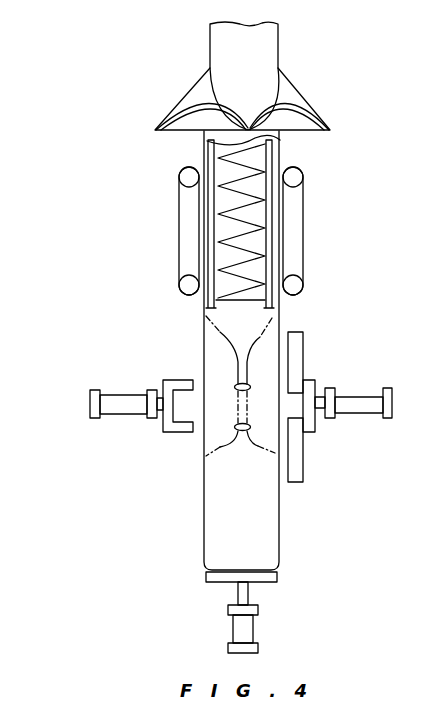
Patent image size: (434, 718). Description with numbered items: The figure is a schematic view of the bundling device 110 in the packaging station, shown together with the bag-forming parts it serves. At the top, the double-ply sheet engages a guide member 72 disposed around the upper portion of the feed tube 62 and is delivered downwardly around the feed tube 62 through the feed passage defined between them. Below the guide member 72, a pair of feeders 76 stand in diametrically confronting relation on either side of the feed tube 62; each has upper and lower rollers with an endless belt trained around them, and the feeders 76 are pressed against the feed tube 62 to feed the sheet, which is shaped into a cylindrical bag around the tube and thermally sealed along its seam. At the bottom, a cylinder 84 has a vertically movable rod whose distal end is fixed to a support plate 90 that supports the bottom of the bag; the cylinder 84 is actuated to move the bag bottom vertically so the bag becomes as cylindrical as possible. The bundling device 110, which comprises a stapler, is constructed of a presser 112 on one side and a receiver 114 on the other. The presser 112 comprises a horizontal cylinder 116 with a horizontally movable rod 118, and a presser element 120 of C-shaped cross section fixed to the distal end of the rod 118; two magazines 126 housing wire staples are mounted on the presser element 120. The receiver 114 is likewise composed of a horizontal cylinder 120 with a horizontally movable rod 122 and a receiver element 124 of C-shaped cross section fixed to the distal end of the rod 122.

The feed tube 62 is at (271, 160).
The guide member 72 is at (318, 131).
The feeders 76 is at (179, 222).
The cylinder 84 is at (245, 630).
The support plate 90 is at (278, 577).
The bundling device 110 is at (98, 437).
The presser 112 is at (363, 417).
The receiver 114 is at (125, 416).
The horizontal cylinder 116 is at (365, 396).
The horizontally movable rod 118 is at (321, 396).
The presser element 120 is at (122, 394).
The horizontally movable rod 122 is at (160, 398).
The receiver element 124 is at (179, 432).
The magazines 126 is at (296, 482).